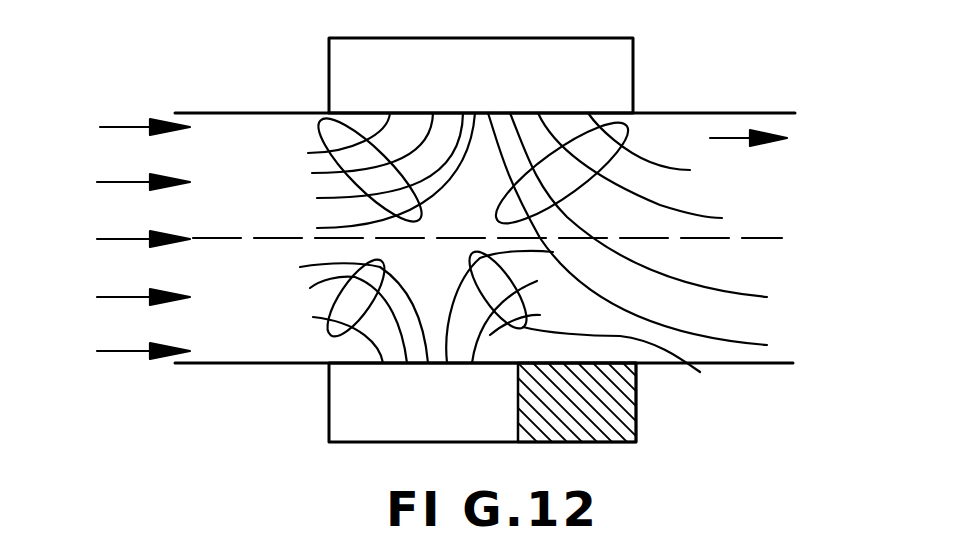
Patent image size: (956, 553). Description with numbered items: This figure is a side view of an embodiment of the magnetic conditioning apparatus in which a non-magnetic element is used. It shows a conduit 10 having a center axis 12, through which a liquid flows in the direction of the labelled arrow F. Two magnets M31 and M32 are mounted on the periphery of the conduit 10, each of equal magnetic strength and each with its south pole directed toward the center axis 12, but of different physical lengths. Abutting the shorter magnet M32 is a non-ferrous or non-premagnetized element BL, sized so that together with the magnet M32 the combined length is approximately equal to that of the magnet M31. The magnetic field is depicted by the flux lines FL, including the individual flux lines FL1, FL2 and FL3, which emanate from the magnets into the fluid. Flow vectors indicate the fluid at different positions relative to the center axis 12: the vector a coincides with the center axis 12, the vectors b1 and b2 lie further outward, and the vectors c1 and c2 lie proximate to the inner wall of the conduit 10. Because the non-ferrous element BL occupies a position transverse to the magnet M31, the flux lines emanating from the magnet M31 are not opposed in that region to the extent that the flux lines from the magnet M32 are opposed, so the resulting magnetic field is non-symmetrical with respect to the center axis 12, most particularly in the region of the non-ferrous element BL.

The conduit 10 is at (757, 110).
The center axis 12 is at (780, 238).
The magnet M31 is at (637, 67).
The magnet M32 is at (328, 398).
The non-ferrous element BL is at (635, 395).
The flux line FL1 is at (322, 118).
The flux line FL2 is at (633, 118).
The flux line FL3 is at (591, 327).
The flux lines FL is at (332, 338).
The flow vector c1 is at (126, 133).
The flow vector b1 is at (126, 188).
The flow vector a is at (126, 240).
The flow vector b2 is at (126, 303).
The flow vector c2 is at (126, 357).
The flow direction arrow F is at (748, 138).